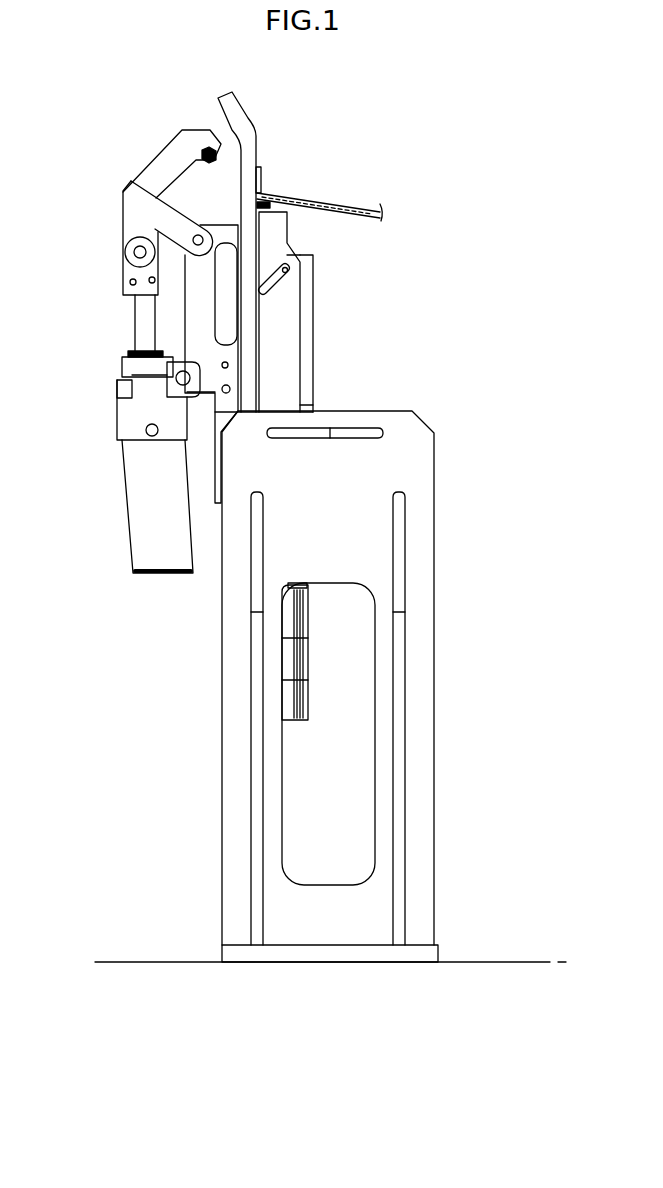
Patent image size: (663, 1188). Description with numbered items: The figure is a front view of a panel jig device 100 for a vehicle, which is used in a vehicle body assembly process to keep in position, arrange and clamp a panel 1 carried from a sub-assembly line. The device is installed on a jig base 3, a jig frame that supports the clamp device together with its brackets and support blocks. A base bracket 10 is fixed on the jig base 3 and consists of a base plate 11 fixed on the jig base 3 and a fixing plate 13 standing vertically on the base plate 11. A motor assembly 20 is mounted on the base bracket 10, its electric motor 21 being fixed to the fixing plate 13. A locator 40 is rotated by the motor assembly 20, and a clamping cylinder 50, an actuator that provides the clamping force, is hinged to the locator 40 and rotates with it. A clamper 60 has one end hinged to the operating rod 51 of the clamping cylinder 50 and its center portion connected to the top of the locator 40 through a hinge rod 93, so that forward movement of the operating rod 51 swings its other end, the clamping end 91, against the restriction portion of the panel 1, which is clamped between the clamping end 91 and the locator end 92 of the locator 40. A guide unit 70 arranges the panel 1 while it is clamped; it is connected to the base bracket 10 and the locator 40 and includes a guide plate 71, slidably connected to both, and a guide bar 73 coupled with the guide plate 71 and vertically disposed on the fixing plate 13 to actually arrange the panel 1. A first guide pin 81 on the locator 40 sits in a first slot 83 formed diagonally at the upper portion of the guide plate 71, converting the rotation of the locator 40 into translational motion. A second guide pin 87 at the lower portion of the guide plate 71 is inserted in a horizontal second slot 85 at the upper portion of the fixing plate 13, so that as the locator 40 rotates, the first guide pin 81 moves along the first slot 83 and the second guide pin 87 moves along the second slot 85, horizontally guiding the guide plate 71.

The panel jig device 100 is at (287, 72).
The panel 1 is at (335, 200).
The jig base 3 is at (520, 960).
The base bracket 10 is at (441, 587).
The base plate 11 is at (338, 953).
The fixing plate 13 is at (424, 472).
The motor assembly 20 is at (313, 697).
The electric motor 21 is at (288, 700).
The locator 40 is at (196, 318).
The clamping cylinder 50 is at (111, 440).
The operating rod 51 is at (138, 312).
The clamper 60 is at (172, 163).
The guide unit 70 is at (306, 323).
The guide plate 71 is at (283, 351).
The guide bar 73 is at (250, 157).
The first guide pin 81 is at (330, 261).
The first slot 83 is at (283, 293).
The second slot 85 is at (353, 430).
The second guide pin 87 is at (280, 434).
The clamping end 91 is at (224, 160).
The locator end 92 is at (263, 198).
The hinge rod 93 is at (165, 211).